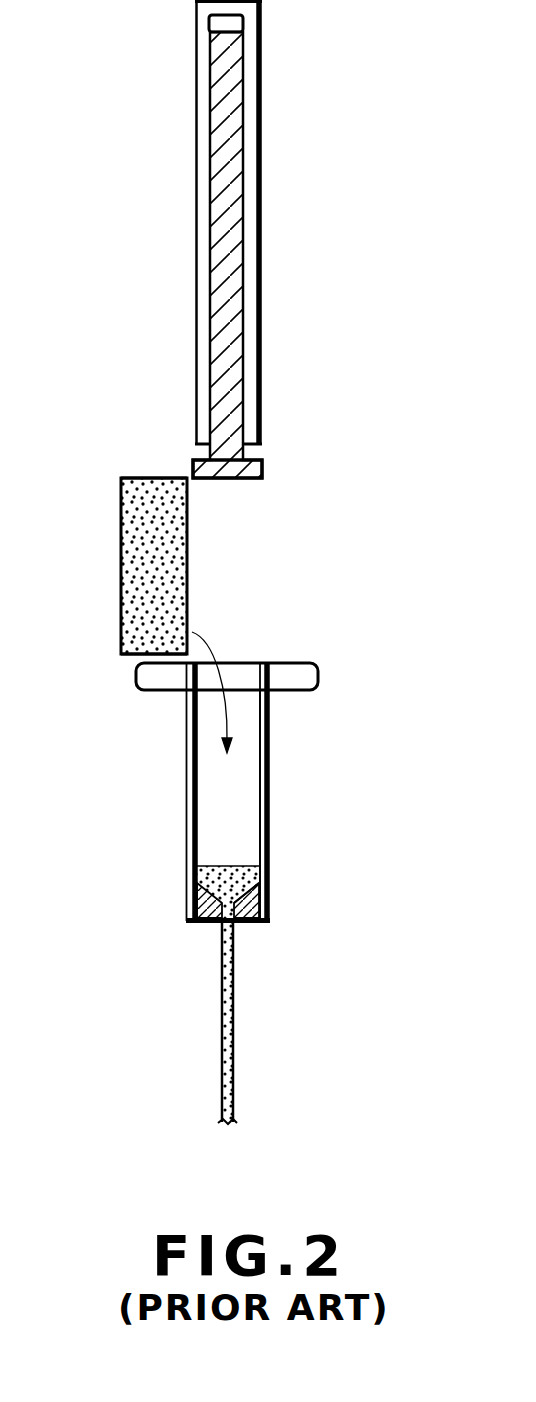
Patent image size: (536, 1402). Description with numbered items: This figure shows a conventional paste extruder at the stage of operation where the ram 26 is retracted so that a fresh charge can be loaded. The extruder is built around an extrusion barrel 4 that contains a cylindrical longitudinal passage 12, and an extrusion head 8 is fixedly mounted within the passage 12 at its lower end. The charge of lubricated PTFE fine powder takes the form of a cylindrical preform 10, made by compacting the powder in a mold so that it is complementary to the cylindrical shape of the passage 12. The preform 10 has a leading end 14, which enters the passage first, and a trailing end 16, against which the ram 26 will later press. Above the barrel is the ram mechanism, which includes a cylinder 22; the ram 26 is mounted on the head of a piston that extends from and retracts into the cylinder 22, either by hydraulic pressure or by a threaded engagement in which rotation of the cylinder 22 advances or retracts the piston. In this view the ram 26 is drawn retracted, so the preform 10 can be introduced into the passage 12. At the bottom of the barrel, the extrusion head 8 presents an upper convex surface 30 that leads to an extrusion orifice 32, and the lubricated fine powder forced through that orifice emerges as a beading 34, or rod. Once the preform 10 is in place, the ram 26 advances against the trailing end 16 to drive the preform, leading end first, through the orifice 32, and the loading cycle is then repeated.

The extrusion barrel 4 is at (187, 797).
The extrusion head 8 is at (268, 898).
The cylindrical preform 10 is at (136, 552).
The longitudinal passage 12 is at (259, 746).
The leading end 14 is at (129, 657).
The trailing end 16 is at (129, 477).
The cylinder 22 is at (262, 108).
The ram 26 is at (262, 470).
The upper convex surface 30 is at (200, 890).
The extrusion orifice 32 is at (193, 921).
The beading 34 is at (222, 1046).